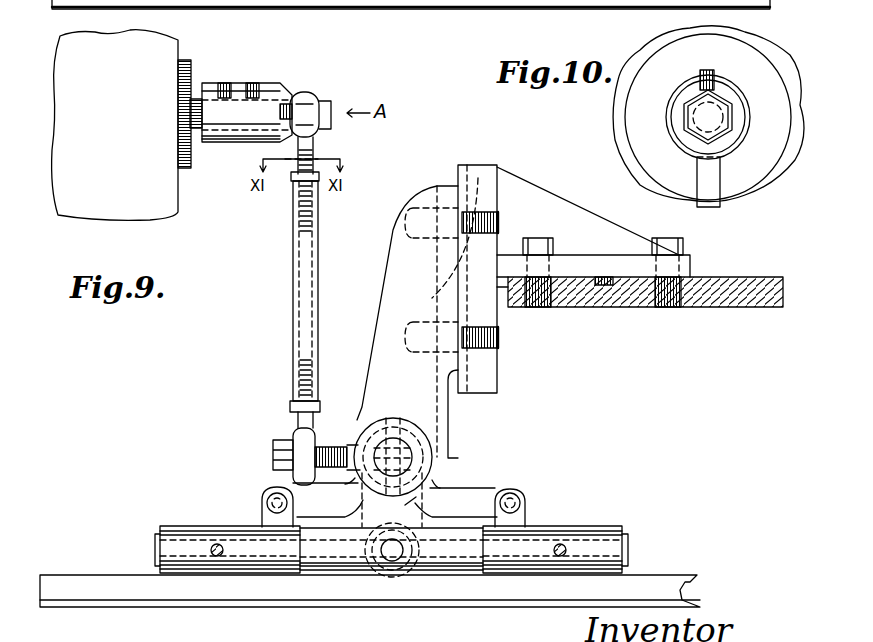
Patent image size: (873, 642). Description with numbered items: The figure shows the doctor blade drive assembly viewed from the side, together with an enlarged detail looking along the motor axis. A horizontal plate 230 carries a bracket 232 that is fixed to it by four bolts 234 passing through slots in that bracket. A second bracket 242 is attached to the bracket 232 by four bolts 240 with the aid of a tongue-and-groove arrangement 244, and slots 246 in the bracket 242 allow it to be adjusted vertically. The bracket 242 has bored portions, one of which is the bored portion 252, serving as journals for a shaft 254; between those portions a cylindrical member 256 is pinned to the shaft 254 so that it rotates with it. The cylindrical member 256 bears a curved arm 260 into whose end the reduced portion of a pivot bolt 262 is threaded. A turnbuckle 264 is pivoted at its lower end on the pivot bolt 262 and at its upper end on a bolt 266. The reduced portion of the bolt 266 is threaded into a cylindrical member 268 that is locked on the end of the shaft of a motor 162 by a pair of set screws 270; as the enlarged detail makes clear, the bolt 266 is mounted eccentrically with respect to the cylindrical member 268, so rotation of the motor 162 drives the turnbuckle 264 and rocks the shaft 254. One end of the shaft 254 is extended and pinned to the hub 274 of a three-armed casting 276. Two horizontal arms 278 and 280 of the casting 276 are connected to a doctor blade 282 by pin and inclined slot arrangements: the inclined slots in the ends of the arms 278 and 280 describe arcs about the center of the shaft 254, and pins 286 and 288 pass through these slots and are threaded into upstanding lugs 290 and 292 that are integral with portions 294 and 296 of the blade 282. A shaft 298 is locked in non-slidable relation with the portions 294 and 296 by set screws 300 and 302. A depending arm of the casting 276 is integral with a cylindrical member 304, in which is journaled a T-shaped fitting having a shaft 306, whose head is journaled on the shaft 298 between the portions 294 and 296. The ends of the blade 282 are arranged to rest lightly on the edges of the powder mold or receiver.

In FIG. 9, the motor 162 is at (157, 46).
In FIG. 10, the motor 162 is at (625, 108).
In FIG. 9, the horizontal plate 230 is at (716, 304).
In FIG. 9, the bracket 232 is at (539, 195).
In FIG. 9, the bolts 234 is at (660, 240).
In FIG. 9, the bolts 240 is at (440, 291).
In FIG. 9, the bracket 242 is at (436, 186).
In FIG. 9, the tongue-and-groove arrangement 244 is at (447, 266).
In FIG. 9, the slots 246 is at (470, 195).
In FIG. 9, the bored portion 252 is at (430, 448).
In FIG. 9, the shaft 254 is at (412, 503).
In FIG. 9, the cylindrical member 256 is at (425, 430).
In FIG. 9, the curved arm 260 is at (343, 444).
In FIG. 9, the pivot bolt 262 is at (276, 458).
In FIG. 9, the turnbuckle 264 is at (297, 269).
In FIG. 10, the turnbuckle 264 is at (713, 172).
In FIG. 9, the bolt 266 is at (312, 100).
In FIG. 10, the bolt 266 is at (727, 105).
In FIG. 9, the cylindrical member 268 is at (266, 96).
In FIG. 10, the cylindrical member 268 is at (722, 80).
In FIG. 9, the set screws 270 is at (250, 82).
In FIG. 10, the set screws 270 is at (702, 70).
In FIG. 9, the hub 274 is at (386, 438).
In FIG. 9, the three-armed casting 276 is at (412, 510).
In FIG. 9, the horizontal arm 278 is at (290, 497).
In FIG. 9, the horizontal arm 280 is at (486, 500).
In FIG. 9, the doctor blade 282 is at (425, 0).
In FIG. 9, the pin 286 is at (268, 504).
In FIG. 9, the pin 288 is at (518, 504).
In FIG. 9, the upstanding lug 290 is at (262, 523).
In FIG. 9, the upstanding lug 292 is at (524, 520).
In FIG. 9, the portion of the blade 294 is at (172, 532).
In FIG. 9, the portion of the blade 296 is at (602, 531).
In FIG. 9, the shaft 298 is at (630, 542).
In FIG. 9, the set screw 300 is at (210, 549).
In FIG. 9, the set screw 302 is at (562, 556).
In FIG. 9, the cylindrical member 304 is at (380, 518).
In FIG. 9, the shaft 306 is at (372, 565).